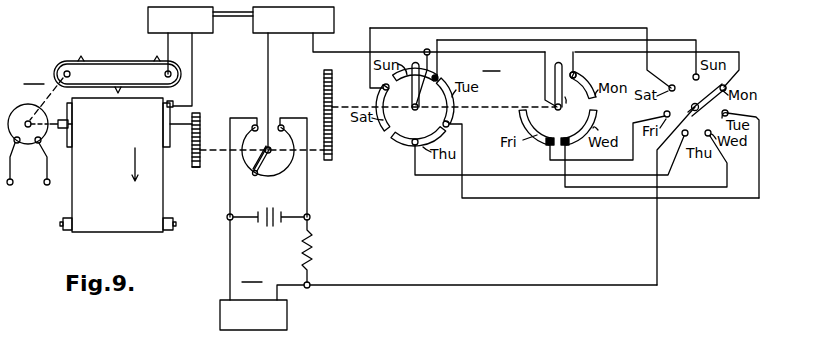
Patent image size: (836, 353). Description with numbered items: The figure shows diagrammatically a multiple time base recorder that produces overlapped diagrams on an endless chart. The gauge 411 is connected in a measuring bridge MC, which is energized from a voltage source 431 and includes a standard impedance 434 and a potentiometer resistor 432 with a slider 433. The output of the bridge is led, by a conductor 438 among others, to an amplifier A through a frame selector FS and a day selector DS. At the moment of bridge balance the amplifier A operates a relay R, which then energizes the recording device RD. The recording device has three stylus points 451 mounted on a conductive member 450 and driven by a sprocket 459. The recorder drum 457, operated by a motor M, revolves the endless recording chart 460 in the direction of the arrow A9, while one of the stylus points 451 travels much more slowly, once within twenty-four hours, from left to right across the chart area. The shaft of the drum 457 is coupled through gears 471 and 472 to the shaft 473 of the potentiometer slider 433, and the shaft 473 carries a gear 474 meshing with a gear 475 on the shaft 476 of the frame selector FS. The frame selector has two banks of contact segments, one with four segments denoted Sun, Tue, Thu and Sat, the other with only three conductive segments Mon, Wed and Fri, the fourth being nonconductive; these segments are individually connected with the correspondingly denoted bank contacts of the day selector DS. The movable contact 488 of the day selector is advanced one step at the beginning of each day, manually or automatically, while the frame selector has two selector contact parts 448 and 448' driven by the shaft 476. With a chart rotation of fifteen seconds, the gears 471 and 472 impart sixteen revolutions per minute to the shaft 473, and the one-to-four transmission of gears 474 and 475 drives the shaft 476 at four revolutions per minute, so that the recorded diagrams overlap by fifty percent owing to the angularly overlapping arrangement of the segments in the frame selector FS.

The gauge 411 is at (288, 324).
The voltage source 431 is at (273, 228).
The potentiometer resistor 432 is at (292, 170).
The slider 433 is at (262, 167).
The standard impedance 434 is at (312, 259).
The conductor from amplifier 438 is at (268, 78).
The selector contact part 448 is at (415, 104).
The selector contact part 448' is at (558, 104).
The conductive member 450 is at (136, 62).
The stylus points 451 is at (129, 88).
The recorder drum 457 is at (183, 158).
The sprocket 459 is at (57, 67).
The endless recording chart 460 is at (155, 193).
The gear 471 is at (197, 113).
The gear 472 is at (200, 163).
The shaft 473 is at (317, 152).
The gear 474 is at (332, 157).
The gear 475 is at (323, 78).
The shaft 476 is at (507, 105).
The movable contact 488 is at (694, 90).
The relay R is at (200, 33).
The amplifier A is at (305, 33).
The motor M is at (20, 106).
The recording device RD is at (35, 77).
The arrow A9 is at (133, 177).
The measuring bridge MC is at (253, 275).
The frame selector FS is at (492, 64).
The day selector DS is at (699, 171).